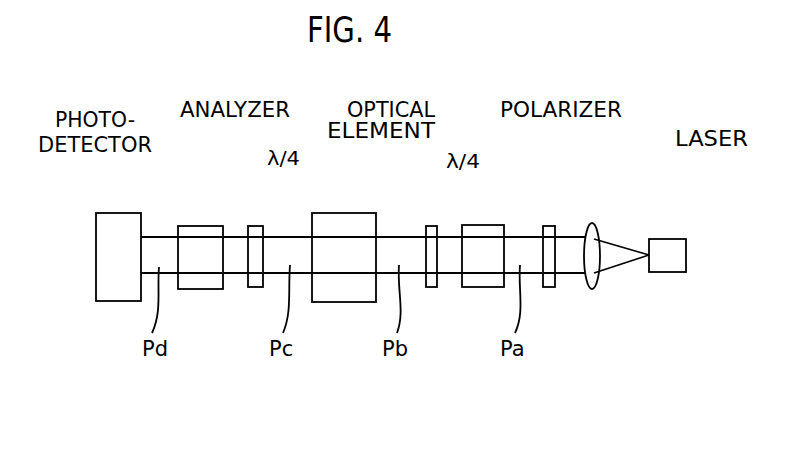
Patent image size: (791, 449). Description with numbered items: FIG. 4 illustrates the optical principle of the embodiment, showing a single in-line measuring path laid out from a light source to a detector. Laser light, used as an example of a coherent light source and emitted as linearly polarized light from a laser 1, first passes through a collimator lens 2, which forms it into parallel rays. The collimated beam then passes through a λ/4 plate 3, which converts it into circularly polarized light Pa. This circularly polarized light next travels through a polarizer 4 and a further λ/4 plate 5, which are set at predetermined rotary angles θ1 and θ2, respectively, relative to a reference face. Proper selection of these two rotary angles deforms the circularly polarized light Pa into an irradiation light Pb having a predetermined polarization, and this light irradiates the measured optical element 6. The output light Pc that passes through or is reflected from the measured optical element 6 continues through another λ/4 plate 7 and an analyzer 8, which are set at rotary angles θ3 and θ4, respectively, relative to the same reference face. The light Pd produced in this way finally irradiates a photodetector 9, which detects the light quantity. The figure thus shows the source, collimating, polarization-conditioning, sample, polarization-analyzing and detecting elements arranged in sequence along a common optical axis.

The laser 1 is at (670, 242).
The collimator lens 2 is at (593, 227).
The λ/4 plate 3 is at (549, 227).
The polarizer 4 is at (492, 232).
The λ/4 plate 5 is at (433, 228).
The measured optical element 6 is at (350, 222).
The λ/4 plate 7 is at (258, 232).
The analyzer 8 is at (200, 233).
The photodetector 9 is at (113, 223).